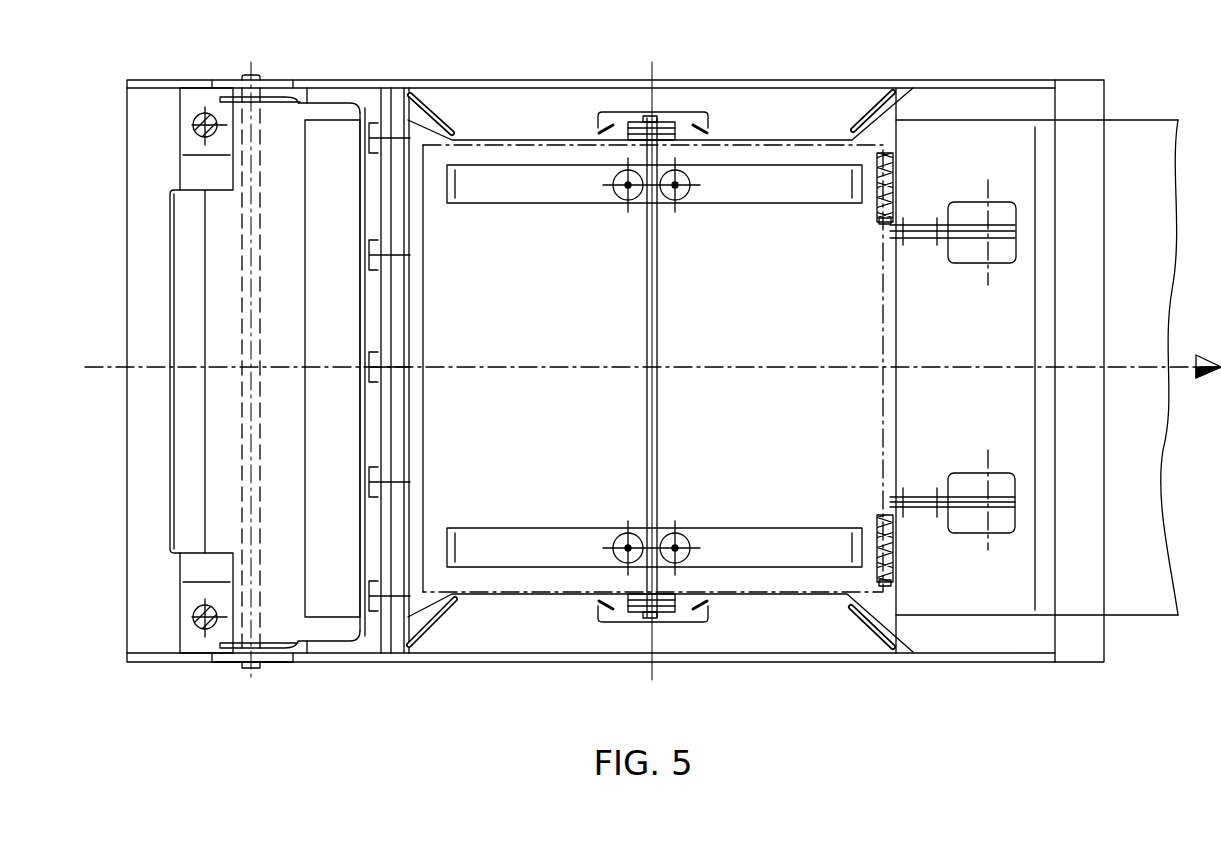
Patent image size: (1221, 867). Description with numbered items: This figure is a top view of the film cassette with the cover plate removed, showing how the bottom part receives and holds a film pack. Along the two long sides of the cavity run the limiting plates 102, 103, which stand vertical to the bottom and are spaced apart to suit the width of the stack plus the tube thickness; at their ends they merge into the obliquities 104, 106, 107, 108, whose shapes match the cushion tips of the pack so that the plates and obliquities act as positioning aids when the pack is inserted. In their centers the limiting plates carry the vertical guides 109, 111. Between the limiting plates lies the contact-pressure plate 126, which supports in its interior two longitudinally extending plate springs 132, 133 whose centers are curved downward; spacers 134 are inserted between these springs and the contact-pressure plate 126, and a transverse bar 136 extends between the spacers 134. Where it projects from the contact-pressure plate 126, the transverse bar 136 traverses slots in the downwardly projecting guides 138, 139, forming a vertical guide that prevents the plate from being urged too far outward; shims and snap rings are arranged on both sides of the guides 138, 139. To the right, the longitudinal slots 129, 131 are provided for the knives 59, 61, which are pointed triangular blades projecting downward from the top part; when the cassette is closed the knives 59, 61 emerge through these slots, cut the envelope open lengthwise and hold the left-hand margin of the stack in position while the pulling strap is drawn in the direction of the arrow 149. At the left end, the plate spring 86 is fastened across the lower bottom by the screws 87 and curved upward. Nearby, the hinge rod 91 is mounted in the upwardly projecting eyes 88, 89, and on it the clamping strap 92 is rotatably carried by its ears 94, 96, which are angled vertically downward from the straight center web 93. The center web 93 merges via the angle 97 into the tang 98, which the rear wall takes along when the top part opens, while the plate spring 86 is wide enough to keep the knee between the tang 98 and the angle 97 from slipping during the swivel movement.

The knife 59 is at (912, 495).
The knife 61 is at (920, 240).
The plate spring 86 is at (190, 142).
The screws 87 is at (200, 113).
The eye 88 is at (228, 84).
The eye 89 is at (218, 660).
The hinge rod 91 is at (247, 664).
The clamping strap 92 is at (271, 358).
The center web 93 is at (287, 137).
The ear 94 is at (272, 97).
The ear 96 is at (275, 648).
The angle 97 is at (217, 297).
The tang 98 is at (180, 470).
The limiting plate 102 is at (757, 138).
The limiting plate 103 is at (733, 598).
The obliquity 104 is at (445, 108).
The obliquity 106 is at (867, 112).
The obliquity 107 is at (430, 633).
The obliquity 108 is at (867, 627).
The vertical guide 109 is at (613, 118).
The vertical guide 111 is at (610, 617).
The contact-pressure plate 126 is at (687, 416).
The longitudinal slot 129 is at (920, 222).
The longitudinal slot 131 is at (912, 512).
The plate spring 132 is at (488, 192).
The plate spring 133 is at (510, 542).
The spacers 134 is at (680, 200).
The transverse bar 136 is at (662, 288).
The guide 138 is at (638, 128).
The guide 139 is at (632, 612).
The arrow 149 is at (1183, 367).